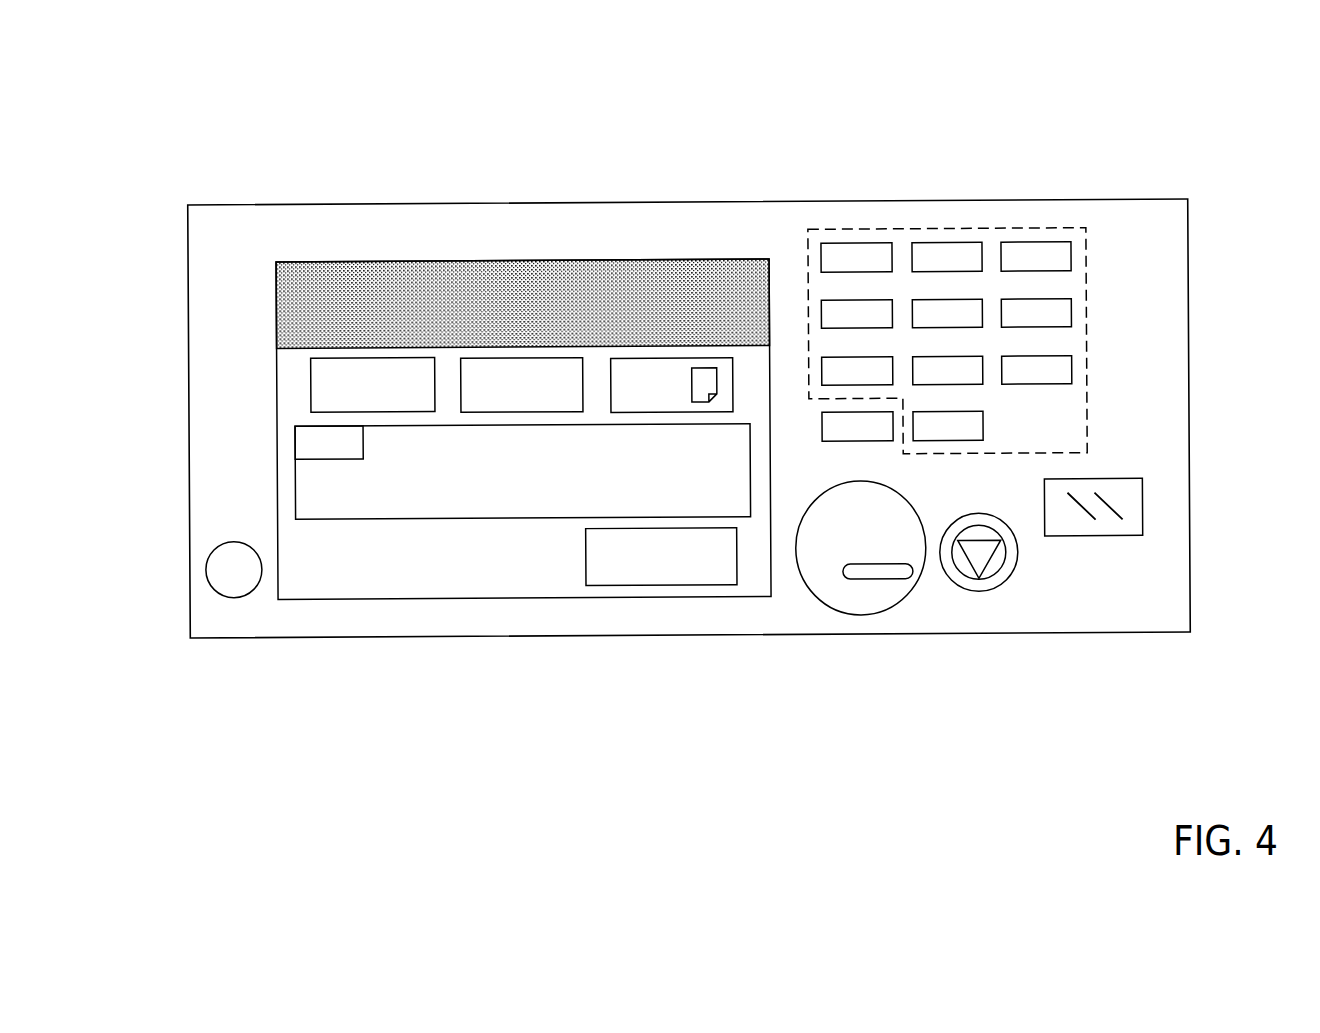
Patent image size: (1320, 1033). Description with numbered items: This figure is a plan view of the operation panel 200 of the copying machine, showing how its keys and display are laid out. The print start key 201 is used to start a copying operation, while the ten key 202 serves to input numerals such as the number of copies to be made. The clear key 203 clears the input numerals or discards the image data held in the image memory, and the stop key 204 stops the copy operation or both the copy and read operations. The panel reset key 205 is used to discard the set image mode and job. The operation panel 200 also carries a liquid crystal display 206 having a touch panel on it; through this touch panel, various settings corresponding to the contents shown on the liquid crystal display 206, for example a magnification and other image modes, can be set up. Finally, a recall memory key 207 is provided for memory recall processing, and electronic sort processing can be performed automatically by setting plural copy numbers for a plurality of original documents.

The operation panel 200 is at (737, 161).
The print start key 201 is at (862, 617).
The ten key 202 is at (933, 228).
The clear key 203 is at (823, 430).
The stop key 204 is at (978, 593).
The panel reset key 205 is at (1112, 537).
The liquid crystal display 206 is at (428, 260).
The recall memory key 207 is at (233, 598).